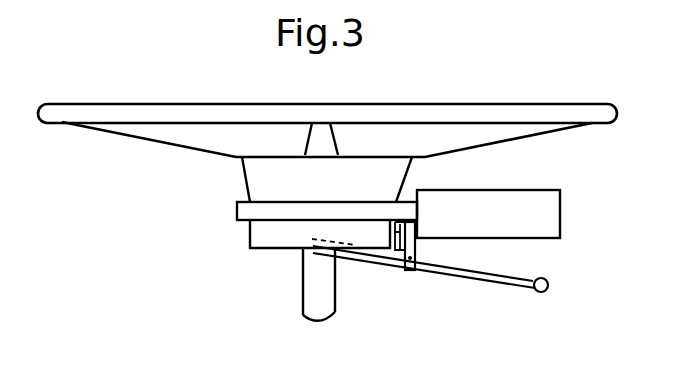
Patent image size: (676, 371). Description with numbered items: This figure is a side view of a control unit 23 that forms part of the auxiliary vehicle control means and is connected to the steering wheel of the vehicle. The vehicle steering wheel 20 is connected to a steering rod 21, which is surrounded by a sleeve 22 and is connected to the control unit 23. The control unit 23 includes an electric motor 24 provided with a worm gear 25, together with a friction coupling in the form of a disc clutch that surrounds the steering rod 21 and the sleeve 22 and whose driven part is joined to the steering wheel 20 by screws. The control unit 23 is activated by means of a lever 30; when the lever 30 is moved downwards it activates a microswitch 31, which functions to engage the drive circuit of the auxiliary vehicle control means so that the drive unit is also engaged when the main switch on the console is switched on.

The steering wheel 20 is at (135, 112).
The steering rod 21 is at (313, 289).
The sleeve 22 is at (238, 207).
The control unit 23 is at (493, 179).
The electric motor 24 is at (548, 216).
The worm gear 25 is at (256, 211).
The lever 30 is at (466, 275).
The microswitch 31 is at (394, 264).